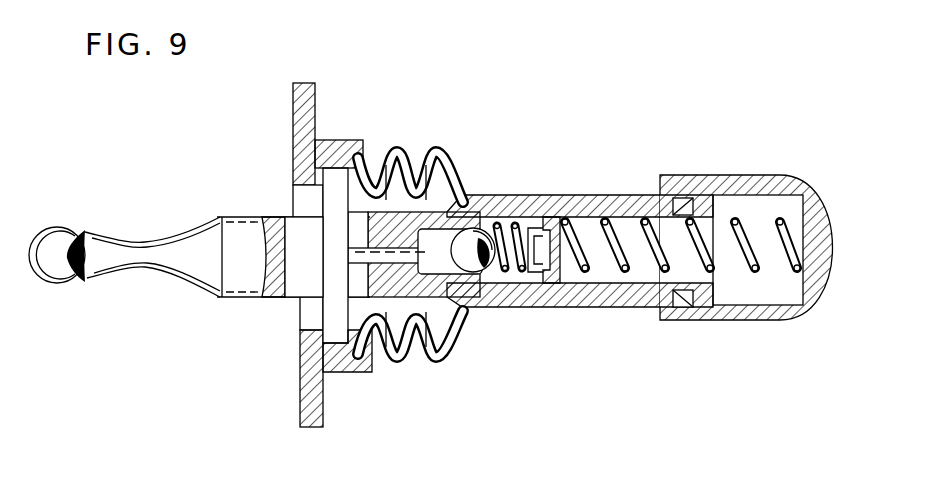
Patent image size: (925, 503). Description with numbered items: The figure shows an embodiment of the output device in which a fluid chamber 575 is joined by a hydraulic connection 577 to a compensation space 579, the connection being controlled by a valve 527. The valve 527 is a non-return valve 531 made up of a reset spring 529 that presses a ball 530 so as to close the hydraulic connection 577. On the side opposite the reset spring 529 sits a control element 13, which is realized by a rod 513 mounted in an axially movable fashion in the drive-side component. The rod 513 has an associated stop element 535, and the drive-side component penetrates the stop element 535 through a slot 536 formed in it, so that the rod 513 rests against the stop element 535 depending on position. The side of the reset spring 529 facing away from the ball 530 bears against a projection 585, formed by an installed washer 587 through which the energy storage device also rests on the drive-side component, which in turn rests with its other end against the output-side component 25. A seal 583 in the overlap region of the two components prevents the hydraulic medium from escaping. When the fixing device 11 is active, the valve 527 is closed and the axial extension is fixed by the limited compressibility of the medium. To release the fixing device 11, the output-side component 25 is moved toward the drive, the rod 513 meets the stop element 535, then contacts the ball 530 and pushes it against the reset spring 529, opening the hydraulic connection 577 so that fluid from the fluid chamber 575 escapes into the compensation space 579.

The fixing device 11 is at (473, 318).
The control element 13 is at (302, 302).
The output-side component 25 is at (822, 215).
The rod 513 is at (380, 322).
The valve 527 is at (483, 307).
The reset spring 529 is at (517, 222).
The ball 530 is at (475, 240).
The non-return valve 531 is at (510, 285).
The stop element 535 is at (347, 172).
The slot 536 is at (290, 228).
The fluid chamber 575 is at (770, 293).
The hydraulic connection 577 is at (424, 150).
The compensation space 579 is at (412, 340).
The seal 583 is at (680, 305).
The projection 585 is at (556, 290).
The washer 587 is at (555, 215).